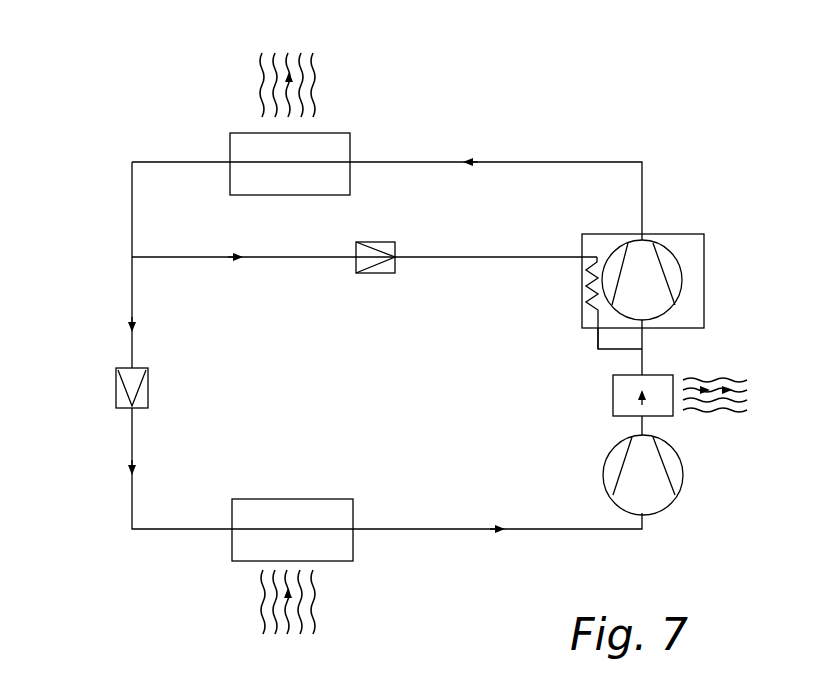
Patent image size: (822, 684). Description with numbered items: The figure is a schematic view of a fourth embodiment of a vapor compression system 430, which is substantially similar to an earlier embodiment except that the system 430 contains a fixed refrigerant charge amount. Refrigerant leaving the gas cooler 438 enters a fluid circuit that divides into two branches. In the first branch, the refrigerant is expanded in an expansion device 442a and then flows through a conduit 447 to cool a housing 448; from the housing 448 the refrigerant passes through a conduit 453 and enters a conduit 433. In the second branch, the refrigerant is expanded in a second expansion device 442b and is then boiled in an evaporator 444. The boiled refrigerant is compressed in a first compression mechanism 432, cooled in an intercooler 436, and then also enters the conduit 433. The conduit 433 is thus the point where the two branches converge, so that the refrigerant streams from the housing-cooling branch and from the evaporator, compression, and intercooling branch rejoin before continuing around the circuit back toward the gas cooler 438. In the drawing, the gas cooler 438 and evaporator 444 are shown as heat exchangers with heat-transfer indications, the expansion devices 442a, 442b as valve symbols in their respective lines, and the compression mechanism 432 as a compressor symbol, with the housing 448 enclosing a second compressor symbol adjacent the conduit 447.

The vapor compression system 430 is at (612, 82).
The gas cooler 438 is at (352, 147).
The evaporator 444 is at (354, 540).
The expansion device 442a is at (385, 275).
The expansion device 442b is at (116, 392).
The conduit 447 is at (602, 233).
The housing 448 is at (685, 240).
The conduit 433 is at (645, 339).
The conduit 453 is at (598, 343).
The intercooler 436 is at (613, 407).
The first compression mechanism 432 is at (688, 477).